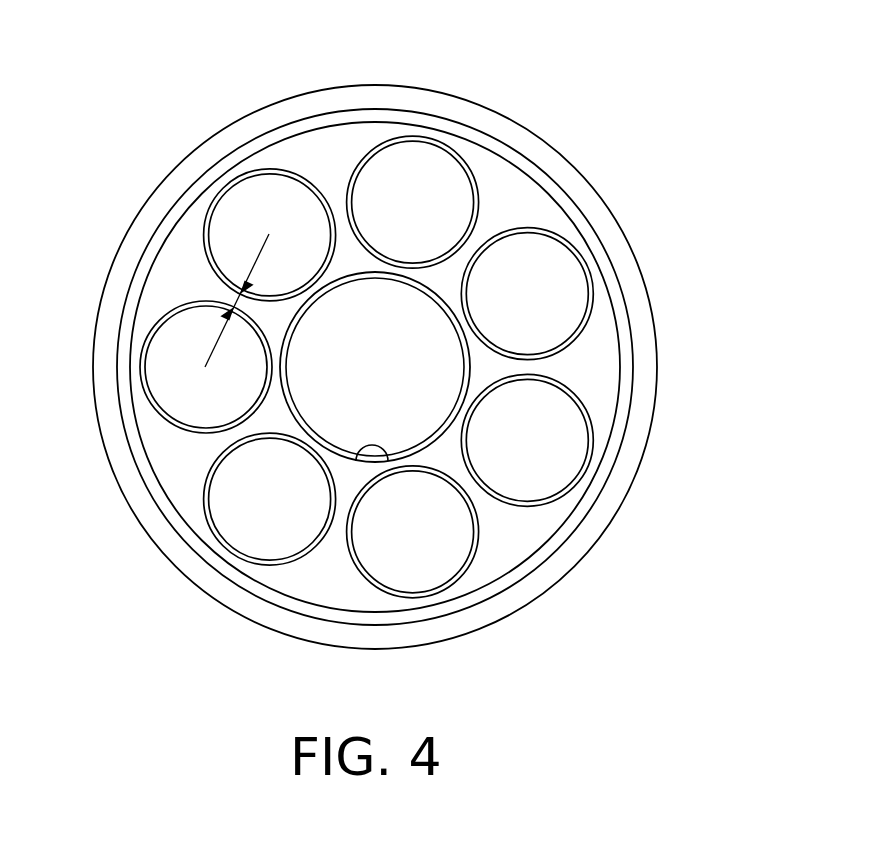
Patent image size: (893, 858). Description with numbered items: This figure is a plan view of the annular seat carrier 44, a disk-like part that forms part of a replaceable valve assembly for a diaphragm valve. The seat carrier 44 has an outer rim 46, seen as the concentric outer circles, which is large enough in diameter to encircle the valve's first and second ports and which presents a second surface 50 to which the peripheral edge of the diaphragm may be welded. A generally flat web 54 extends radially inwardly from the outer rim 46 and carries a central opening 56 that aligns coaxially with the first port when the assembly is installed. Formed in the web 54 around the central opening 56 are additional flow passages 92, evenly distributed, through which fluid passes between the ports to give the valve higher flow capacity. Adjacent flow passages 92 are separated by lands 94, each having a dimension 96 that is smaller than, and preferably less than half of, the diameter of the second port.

The seat carrier 44 is at (690, 214).
The outer rim 46 is at (640, 265).
The second surface 50 is at (647, 368).
The web 54 is at (508, 187).
The central opening 56 is at (358, 453).
The flow passages 92 is at (415, 180).
The lands 94 is at (327, 177).
The dimension 96 is at (240, 305).